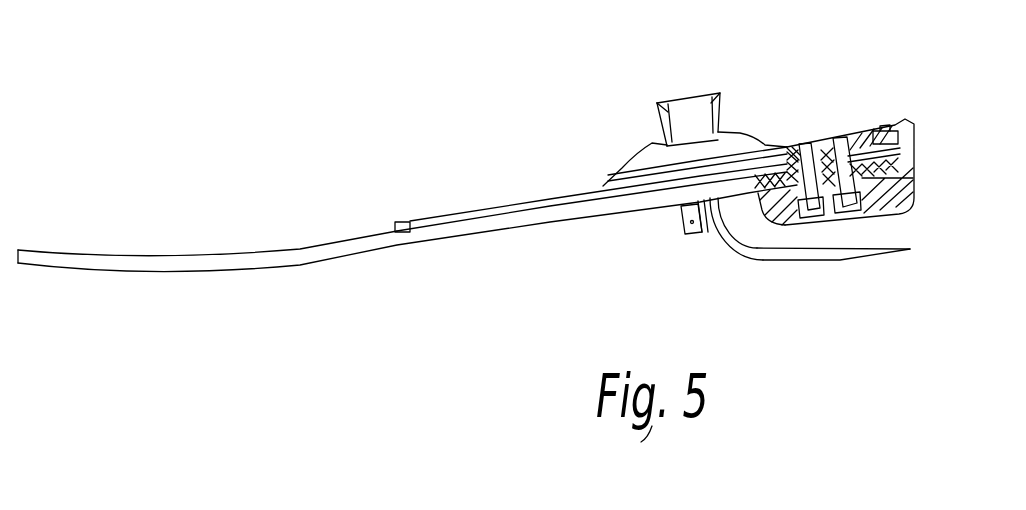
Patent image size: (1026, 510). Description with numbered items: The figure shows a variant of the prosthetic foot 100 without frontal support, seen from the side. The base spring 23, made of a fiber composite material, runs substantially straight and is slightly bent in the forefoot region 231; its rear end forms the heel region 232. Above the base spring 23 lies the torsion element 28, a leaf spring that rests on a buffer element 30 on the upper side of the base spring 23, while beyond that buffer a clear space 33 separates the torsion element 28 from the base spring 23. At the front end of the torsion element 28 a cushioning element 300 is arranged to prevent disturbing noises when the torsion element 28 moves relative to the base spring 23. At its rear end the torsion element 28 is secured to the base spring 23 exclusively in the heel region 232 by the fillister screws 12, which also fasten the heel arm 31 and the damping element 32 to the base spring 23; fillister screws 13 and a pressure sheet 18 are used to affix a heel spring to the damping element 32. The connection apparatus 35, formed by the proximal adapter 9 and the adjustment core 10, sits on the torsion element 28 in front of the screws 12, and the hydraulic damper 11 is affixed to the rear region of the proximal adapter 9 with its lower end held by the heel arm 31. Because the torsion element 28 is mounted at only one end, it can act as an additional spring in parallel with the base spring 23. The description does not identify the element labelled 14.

The proximal adapter 9 is at (683, 170).
The adjustment core 10 is at (693, 118).
The hydraulic damper 11 is at (913, 168).
The fillister screws 12 is at (903, 212).
The fillister screws 13 is at (685, 232).
The bottom plate 14 is at (880, 255).
The pressure sheet 18 is at (700, 234).
The base spring 23 is at (290, 258).
The torsion element 28 is at (610, 195).
The buffer element 30 is at (423, 233).
The heel arm 31 is at (924, 118).
The damping element 32 is at (757, 235).
The clear space 33 is at (568, 206).
The connection apparatus 35 is at (738, 127).
The prosthetic foot 100 is at (812, 76).
The forefoot region 231 is at (173, 278).
The heel region 232 is at (910, 97).
The cushioning element 300 is at (408, 222).